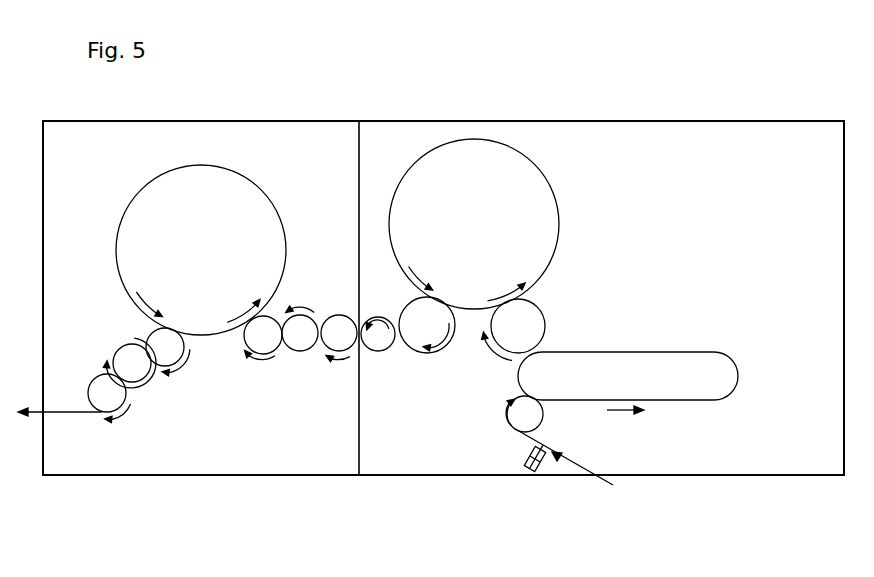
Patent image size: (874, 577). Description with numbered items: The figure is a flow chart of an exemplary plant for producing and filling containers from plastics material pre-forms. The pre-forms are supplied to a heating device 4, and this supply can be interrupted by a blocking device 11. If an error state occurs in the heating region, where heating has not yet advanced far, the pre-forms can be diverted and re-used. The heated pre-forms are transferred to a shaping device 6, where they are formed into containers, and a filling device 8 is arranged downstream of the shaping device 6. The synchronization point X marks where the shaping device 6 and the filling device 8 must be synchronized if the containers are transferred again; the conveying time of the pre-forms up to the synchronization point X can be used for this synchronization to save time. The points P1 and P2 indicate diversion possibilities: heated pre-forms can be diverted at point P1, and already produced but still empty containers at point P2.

The filling device 8 is at (278, 148).
The shaping device 6 is at (514, 146).
The heating device 4 is at (675, 323).
The synchronization point X is at (358, 425).
The diversion point P2 is at (410, 355).
The diversion point P1 is at (490, 358).
The blocking device 11 is at (527, 472).